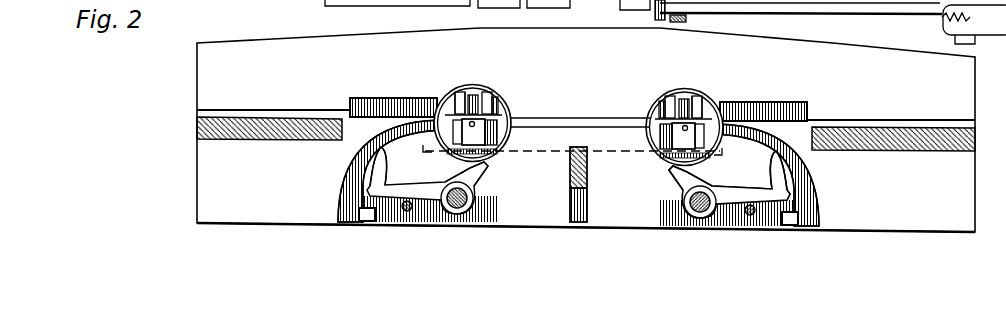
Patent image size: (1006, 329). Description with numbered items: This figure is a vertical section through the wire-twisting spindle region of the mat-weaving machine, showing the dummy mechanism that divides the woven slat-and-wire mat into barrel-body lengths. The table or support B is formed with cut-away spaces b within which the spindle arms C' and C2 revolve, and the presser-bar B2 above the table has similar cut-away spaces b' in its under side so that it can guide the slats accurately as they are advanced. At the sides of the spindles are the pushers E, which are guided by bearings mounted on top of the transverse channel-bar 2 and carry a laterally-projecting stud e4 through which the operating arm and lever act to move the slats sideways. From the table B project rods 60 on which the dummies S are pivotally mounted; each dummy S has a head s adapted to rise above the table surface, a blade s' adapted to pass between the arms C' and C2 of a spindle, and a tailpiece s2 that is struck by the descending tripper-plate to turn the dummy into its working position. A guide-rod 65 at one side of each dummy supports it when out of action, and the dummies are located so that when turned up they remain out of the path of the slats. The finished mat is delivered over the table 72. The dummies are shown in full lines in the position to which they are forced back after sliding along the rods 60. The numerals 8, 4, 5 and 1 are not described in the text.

The transverse channel-bar 2 is at (363, 11).
The block 8 is at (405, 5).
The bar 4 is at (537, 0).
The laterally-projecting stud e4 is at (693, 19).
The table or support B is at (200, 180).
The table 72 is at (230, 127).
The pusher E is at (393, 110).
The presser-bar B2 is at (578, 136).
The dummy S is at (578, 182).
The head s is at (758, 184).
The blade s' is at (595, 168).
The tailpiece s2 is at (480, 168).
The rod 60 is at (457, 206).
The guide-rod 65 is at (407, 208).
The foot 5 is at (362, 210).
The arm C' is at (582, 109).
The cut-away space b' is at (576, 80).
The arm C2 is at (483, 127).
The cut-away space b is at (572, 121).
The post 1 is at (588, 165).